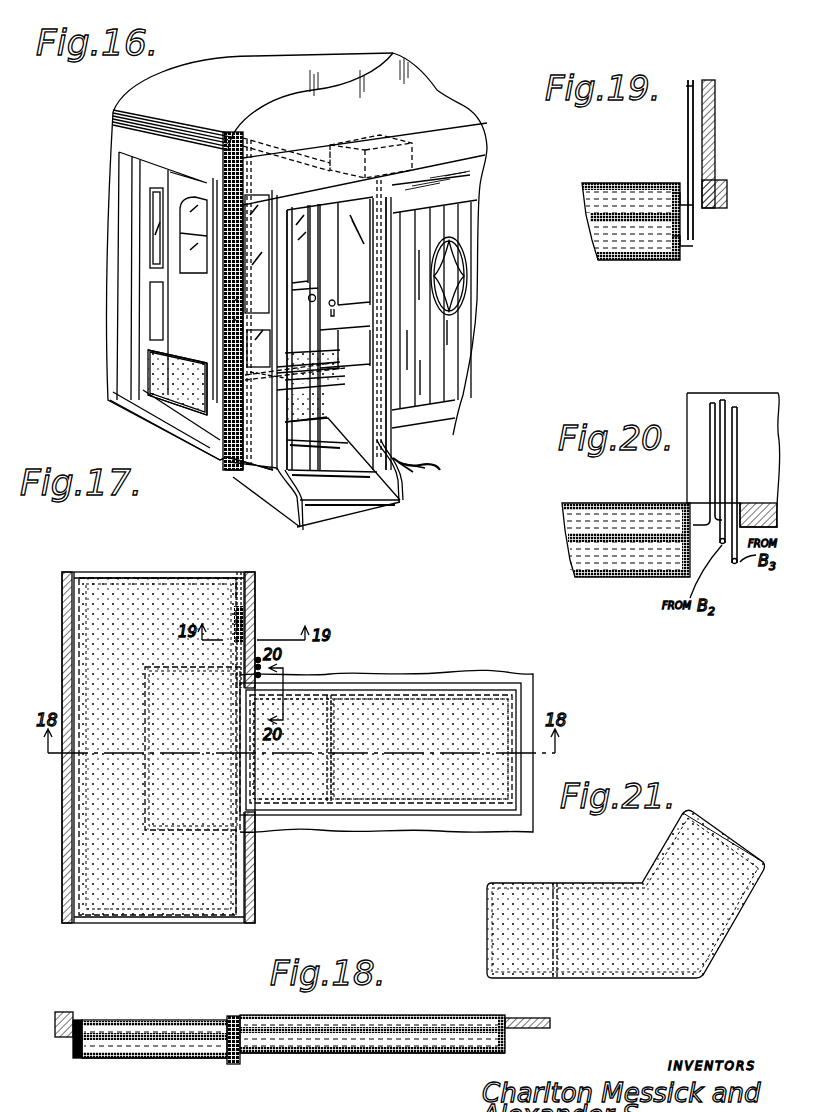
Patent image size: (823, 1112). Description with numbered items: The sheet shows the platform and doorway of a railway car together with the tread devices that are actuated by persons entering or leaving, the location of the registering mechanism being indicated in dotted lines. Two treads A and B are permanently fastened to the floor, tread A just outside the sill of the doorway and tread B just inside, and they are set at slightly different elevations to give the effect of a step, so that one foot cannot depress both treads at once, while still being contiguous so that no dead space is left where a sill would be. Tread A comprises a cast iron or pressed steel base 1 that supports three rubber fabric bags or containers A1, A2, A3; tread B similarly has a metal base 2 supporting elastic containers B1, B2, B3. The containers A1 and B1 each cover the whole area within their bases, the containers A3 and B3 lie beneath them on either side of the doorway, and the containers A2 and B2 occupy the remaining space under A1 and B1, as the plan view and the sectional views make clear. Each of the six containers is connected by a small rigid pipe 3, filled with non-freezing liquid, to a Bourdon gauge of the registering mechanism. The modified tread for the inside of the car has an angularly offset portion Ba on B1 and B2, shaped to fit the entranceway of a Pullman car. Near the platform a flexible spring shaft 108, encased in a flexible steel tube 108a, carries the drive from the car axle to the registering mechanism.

In FIG. 16, the base 1 is at (175, 405).
In FIG. 19, the base 1 is at (641, 263).
In FIG. 17, the base 1 is at (65, 900).
In FIG. 18, the base 1 is at (75, 1047).
In FIG. 16, the metal base 2 is at (300, 386).
In FIG. 20, the metal base 2 is at (605, 577).
In FIG. 17, the metal base 2 is at (436, 815).
In FIG. 18, the metal base 2 is at (370, 1053).
In FIG. 16, the small rigid pipe 3 is at (311, 152).
In FIG. 19, the small rigid pipe 3 is at (688, 100).
In FIG. 20, the small rigid pipe 3 is at (712, 450).
In FIG. 17, the small rigid pipe 3 is at (248, 618).
In FIG. 16, the flexible spring shaft 108 is at (442, 470).
In FIG. 16, the flexible steel tube 108a is at (413, 474).
In FIG. 16, the tread A is at (150, 380).
In FIG. 19, the tread A is at (573, 219).
In FIG. 17, the tread A is at (127, 602).
In FIG. 18, the tread A is at (128, 1020).
In FIG. 16, the rubber fabric container A1 is at (186, 372).
In FIG. 19, the rubber fabric container A1 is at (605, 183).
In FIG. 17, the rubber fabric container A1 is at (230, 870).
In FIG. 18, the rubber fabric container A1 is at (165, 1020).
In FIG. 19, the rubber fabric container A2 is at (605, 240).
In FIG. 17, the rubber fabric container A2 is at (250, 855).
In FIG. 18, the rubber fabric container A2 is at (88, 1060).
In FIG. 17, the rubber fabric container A3 is at (145, 760).
In FIG. 18, the rubber fabric container A3 is at (170, 1045).
In FIG. 16, the tread B is at (320, 372).
In FIG. 20, the tread B is at (552, 549).
In FIG. 17, the tread B is at (400, 712).
In FIG. 18, the tread B is at (410, 1015).
In FIG. 16, the elastic container B1 is at (280, 378).
In FIG. 20, the elastic container B1 is at (607, 503).
In FIG. 17, the elastic container B1 is at (490, 715).
In FIG. 21, the elastic container B1 is at (590, 905).
In FIG. 18, the elastic container B1 is at (460, 1015).
In FIG. 17, the elastic container B2 is at (335, 708).
In FIG. 18, the elastic container B2 is at (420, 1053).
In FIG. 20, the elastic container B3 is at (626, 565).
In FIG. 17, the elastic container B3 is at (322, 700).
In FIG. 18, the elastic container B3 is at (295, 1053).
In FIG. 21, the angularly offset portion Ba is at (735, 858).